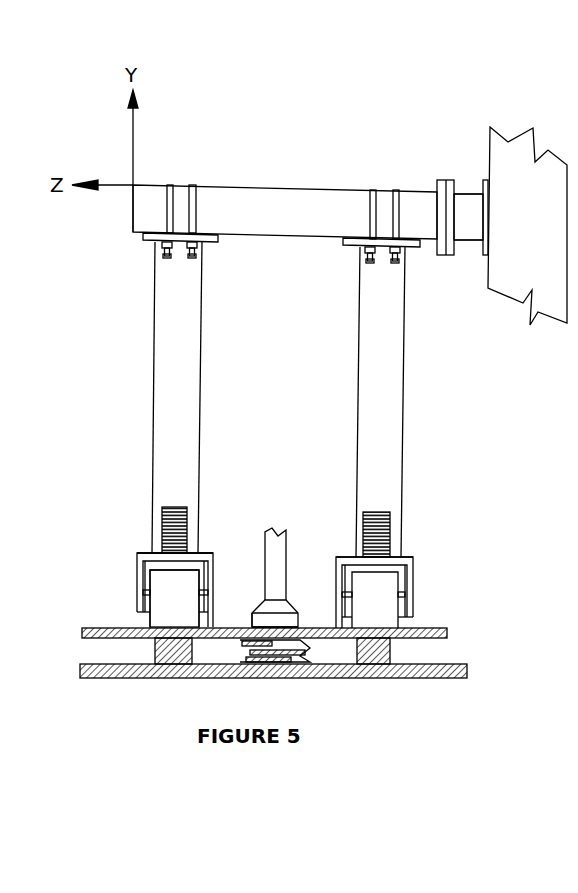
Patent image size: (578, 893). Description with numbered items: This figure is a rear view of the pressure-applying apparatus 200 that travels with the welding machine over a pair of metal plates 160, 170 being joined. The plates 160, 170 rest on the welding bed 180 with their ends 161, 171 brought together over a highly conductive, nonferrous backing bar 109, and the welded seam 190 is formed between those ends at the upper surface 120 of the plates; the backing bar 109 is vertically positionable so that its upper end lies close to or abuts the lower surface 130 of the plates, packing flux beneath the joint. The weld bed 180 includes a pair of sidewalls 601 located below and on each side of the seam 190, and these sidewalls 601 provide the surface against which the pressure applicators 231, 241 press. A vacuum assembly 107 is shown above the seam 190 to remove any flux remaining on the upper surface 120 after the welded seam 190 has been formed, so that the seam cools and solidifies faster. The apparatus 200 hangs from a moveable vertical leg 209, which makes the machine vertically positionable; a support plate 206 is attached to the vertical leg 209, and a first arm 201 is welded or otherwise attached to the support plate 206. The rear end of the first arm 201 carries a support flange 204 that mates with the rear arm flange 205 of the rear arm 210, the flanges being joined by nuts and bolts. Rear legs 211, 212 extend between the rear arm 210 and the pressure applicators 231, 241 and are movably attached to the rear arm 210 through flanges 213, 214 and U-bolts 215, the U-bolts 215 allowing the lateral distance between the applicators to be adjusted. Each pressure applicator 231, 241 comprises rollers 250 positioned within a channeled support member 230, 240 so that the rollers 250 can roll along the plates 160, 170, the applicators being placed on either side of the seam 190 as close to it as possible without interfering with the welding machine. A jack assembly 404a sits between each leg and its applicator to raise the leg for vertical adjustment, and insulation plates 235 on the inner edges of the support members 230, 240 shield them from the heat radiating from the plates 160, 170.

The apparatus 200 is at (311, 95).
The first arm 201 is at (468, 225).
The support flange 204 is at (443, 255).
The rear arm flange 205 is at (442, 180).
The support plate 206 is at (486, 213).
The moveable vertical leg 209 is at (508, 142).
The rear arm 210 is at (282, 190).
The rear leg 211 is at (177, 395).
The rear leg 212 is at (380, 413).
The flange 213 is at (345, 247).
The flange 214 is at (217, 238).
The U-bolts 215 is at (197, 183).
The vacuum assembly 107 is at (277, 530).
The backing bar 109 is at (308, 662).
The upper surface 120 is at (429, 612).
The lower surface 130 is at (441, 668).
The metal plate 160 is at (100, 626).
The end 161 is at (262, 620).
The metal plate 170 is at (446, 630).
The end 171 is at (262, 665).
The welding bed 180 is at (87, 677).
The welded seam 190 is at (270, 633).
The channeled support member 230 is at (415, 558).
The pressure applicator 231 is at (442, 560).
The insulation plates 235 is at (217, 562).
The channeled support member 240 is at (142, 555).
The pressure applicator 241 is at (118, 573).
The rollers 250 is at (182, 607).
The jack assembly 404a is at (168, 520).
The sidewalls 601 is at (175, 665).